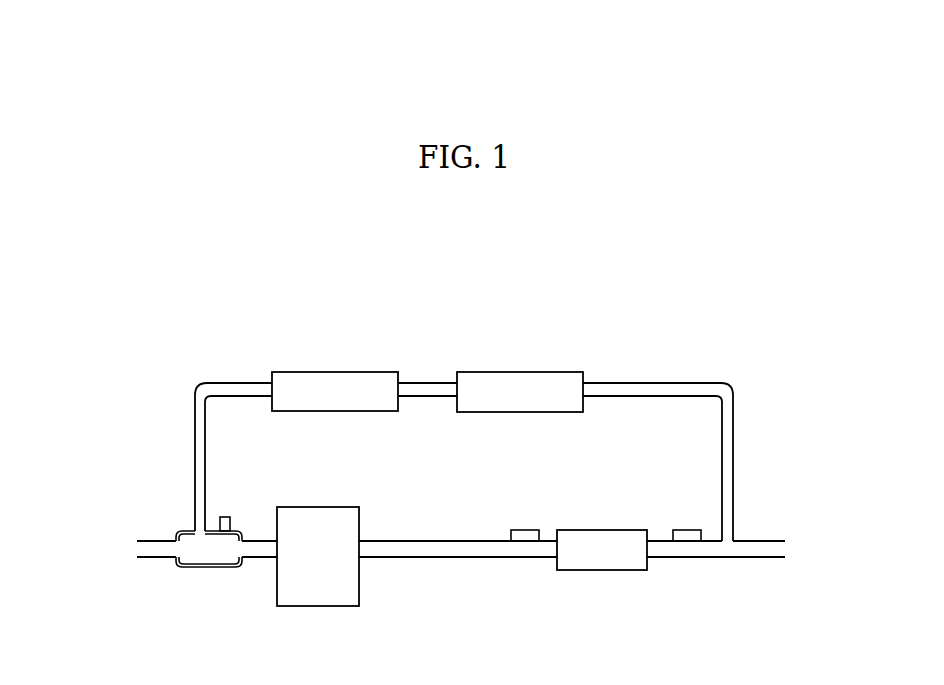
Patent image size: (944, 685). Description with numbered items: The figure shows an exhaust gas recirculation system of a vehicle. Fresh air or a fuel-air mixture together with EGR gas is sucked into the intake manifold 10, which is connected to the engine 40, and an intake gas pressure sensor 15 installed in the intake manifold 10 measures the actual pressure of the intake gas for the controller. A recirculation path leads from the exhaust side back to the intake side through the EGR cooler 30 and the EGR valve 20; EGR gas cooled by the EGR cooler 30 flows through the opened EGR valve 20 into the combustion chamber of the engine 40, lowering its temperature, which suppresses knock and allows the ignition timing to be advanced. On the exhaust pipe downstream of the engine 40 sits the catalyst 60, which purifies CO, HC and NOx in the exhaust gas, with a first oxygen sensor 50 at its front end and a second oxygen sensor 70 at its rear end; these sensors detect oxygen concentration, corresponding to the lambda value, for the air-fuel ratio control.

The intake manifold 10 is at (194, 570).
The intake gas pressure sensor 15 is at (226, 517).
The EGR valve 20 is at (300, 372).
The EGR cooler 30 is at (491, 372).
The engine 40 is at (336, 607).
The first oxygen sensor 50 is at (517, 530).
The catalyst 60 is at (615, 571).
The second oxygen sensor 70 is at (678, 530).